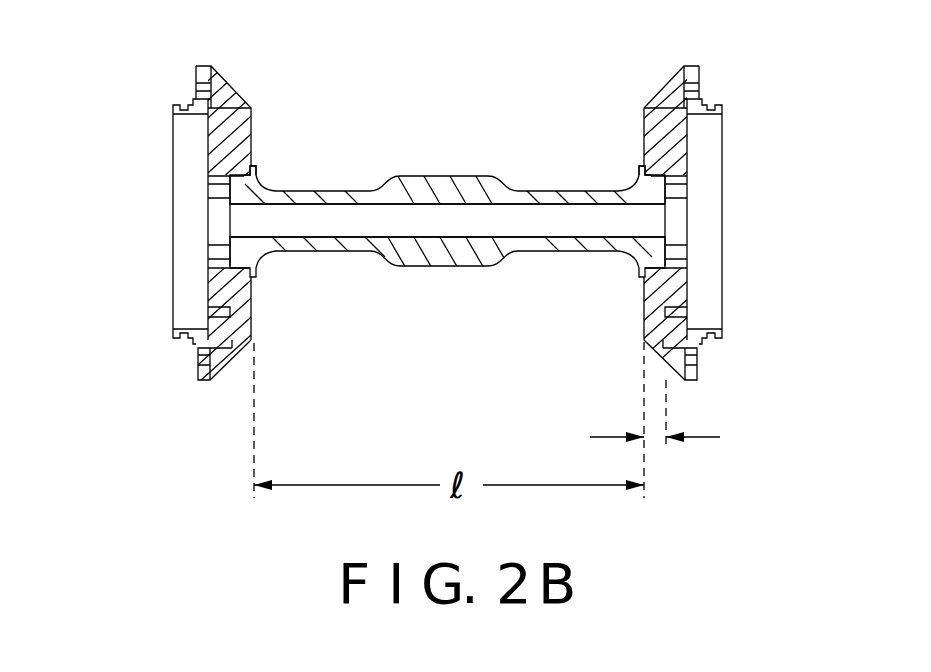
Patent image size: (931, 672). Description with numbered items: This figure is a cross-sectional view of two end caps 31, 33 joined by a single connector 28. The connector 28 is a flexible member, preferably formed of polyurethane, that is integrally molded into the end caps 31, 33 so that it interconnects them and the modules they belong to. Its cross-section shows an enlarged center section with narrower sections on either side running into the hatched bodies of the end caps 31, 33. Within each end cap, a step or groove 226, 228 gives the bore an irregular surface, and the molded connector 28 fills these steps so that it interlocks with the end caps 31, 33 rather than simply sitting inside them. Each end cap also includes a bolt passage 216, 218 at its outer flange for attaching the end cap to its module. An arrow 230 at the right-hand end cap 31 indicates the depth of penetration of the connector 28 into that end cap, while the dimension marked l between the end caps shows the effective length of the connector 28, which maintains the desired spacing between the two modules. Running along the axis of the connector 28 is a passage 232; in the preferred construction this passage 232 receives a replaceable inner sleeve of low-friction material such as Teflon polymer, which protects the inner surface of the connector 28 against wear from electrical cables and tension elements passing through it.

The connector 28 is at (438, 141).
The end cap 31 is at (716, 48).
The end cap 33 is at (268, 76).
The bolt passage 216 is at (718, 355).
The bolt passage 218 is at (223, 352).
The step or groove 226 is at (654, 172).
The step or groove 228 is at (238, 172).
The arrow indicating depth of penetration 230 is at (700, 437).
The passage 232 is at (655, 224).